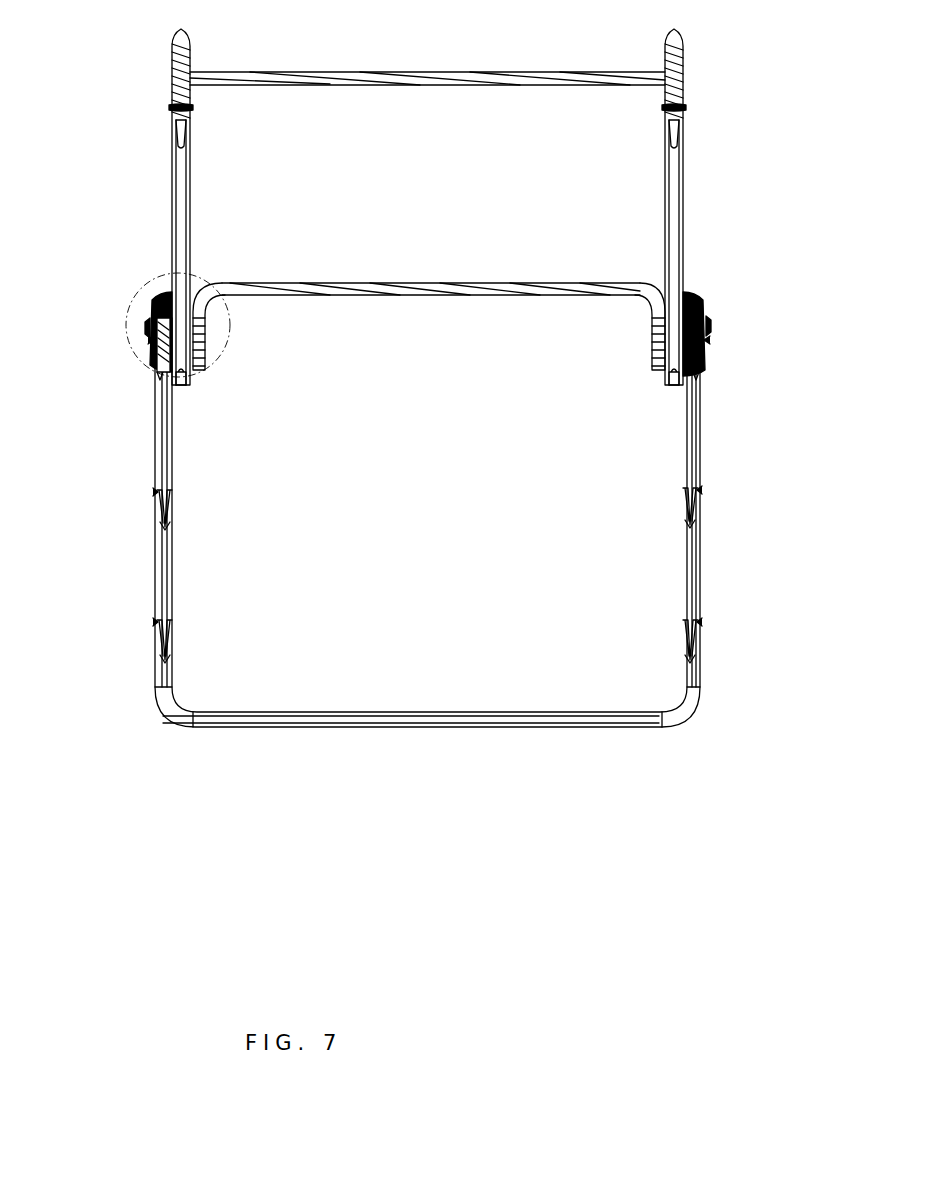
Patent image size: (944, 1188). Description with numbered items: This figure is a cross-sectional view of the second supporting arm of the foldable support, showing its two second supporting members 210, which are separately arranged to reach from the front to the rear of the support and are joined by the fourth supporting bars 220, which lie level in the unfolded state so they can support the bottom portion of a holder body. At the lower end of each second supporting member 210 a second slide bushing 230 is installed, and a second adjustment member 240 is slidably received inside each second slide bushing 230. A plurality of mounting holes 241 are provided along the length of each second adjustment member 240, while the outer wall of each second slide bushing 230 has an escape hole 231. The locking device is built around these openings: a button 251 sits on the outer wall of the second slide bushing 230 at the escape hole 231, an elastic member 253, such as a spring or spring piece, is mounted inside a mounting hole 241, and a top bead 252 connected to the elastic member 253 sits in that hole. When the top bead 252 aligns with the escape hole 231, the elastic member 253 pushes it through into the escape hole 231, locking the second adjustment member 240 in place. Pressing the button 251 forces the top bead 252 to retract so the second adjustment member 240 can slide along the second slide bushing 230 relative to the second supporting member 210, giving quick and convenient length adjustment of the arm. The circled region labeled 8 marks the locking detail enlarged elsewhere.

The detail circle 8 is at (128, 300).
The second supporting member 210 is at (172, 205).
The fourth supporting bar 220 is at (250, 82).
The second slide bushing 230 is at (150, 305).
The escape hole 231 is at (148, 345).
The second adjustment member 240 is at (155, 450).
The mounting hole 241 is at (155, 497).
The button 251 is at (148, 325).
The top bead 252 is at (148, 338).
The elastic member 253 is at (155, 375).